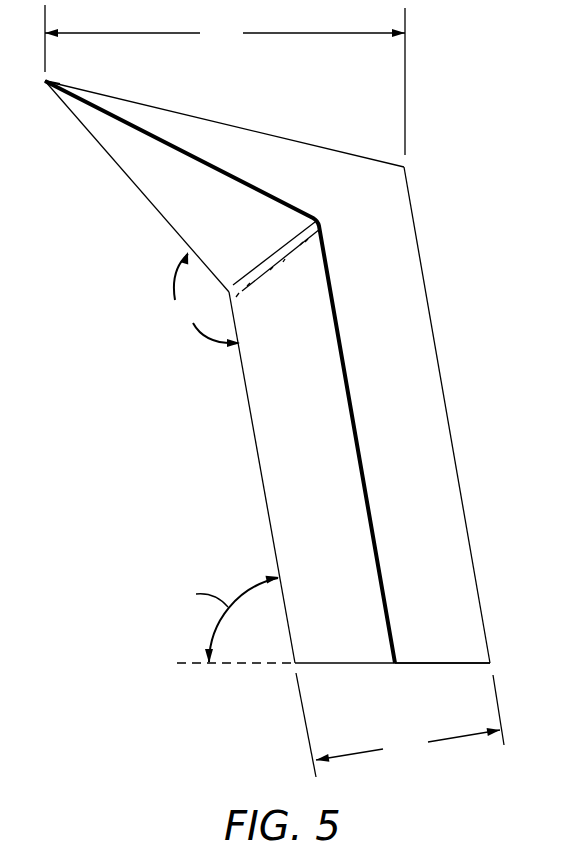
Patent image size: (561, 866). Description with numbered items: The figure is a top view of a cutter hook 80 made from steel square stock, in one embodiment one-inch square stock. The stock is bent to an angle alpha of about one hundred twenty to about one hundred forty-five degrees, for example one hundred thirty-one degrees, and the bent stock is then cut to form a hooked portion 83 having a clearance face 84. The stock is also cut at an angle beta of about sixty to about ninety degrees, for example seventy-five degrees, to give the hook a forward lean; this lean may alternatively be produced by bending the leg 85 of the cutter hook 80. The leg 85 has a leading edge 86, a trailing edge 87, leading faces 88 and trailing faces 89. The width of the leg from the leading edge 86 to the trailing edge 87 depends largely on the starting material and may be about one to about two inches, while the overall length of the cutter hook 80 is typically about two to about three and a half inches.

The cutter hook 80 is at (284, 391).
The hooked portion 83 is at (46, 80).
The clearance face 84 is at (228, 125).
The leg 85 is at (371, 396).
The leading edge 86 is at (246, 383).
The trailing edge 87 is at (443, 388).
The leading faces 88 is at (283, 440).
The trailing faces 89 is at (435, 510).